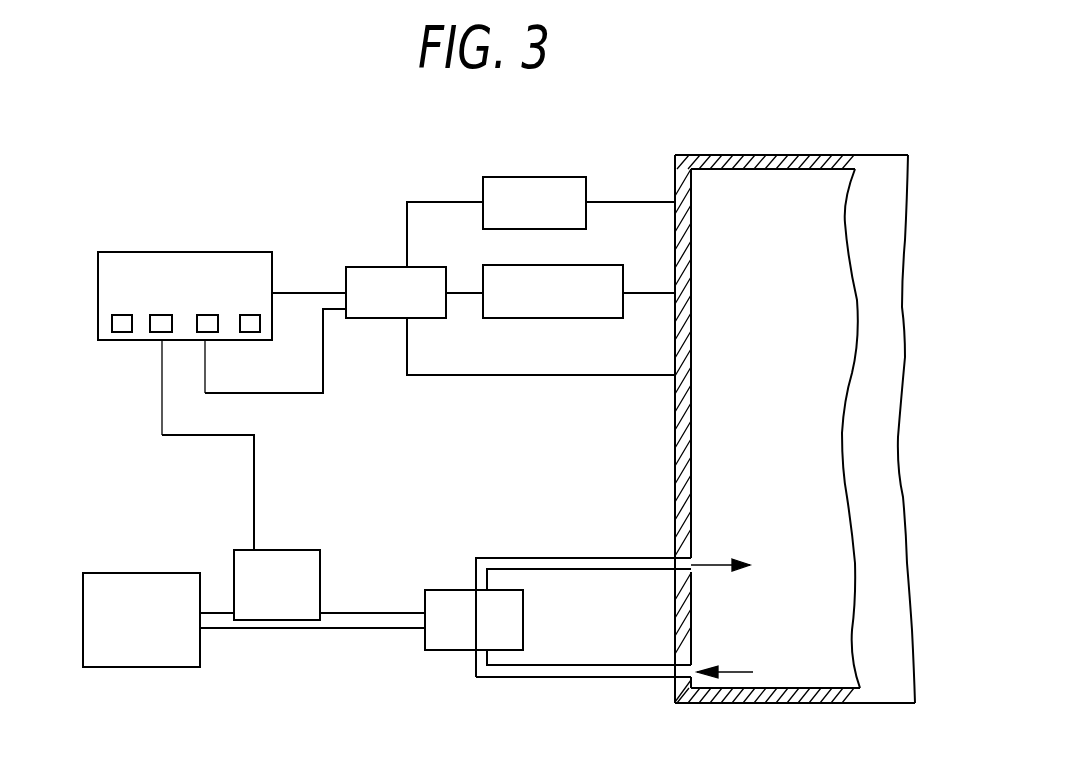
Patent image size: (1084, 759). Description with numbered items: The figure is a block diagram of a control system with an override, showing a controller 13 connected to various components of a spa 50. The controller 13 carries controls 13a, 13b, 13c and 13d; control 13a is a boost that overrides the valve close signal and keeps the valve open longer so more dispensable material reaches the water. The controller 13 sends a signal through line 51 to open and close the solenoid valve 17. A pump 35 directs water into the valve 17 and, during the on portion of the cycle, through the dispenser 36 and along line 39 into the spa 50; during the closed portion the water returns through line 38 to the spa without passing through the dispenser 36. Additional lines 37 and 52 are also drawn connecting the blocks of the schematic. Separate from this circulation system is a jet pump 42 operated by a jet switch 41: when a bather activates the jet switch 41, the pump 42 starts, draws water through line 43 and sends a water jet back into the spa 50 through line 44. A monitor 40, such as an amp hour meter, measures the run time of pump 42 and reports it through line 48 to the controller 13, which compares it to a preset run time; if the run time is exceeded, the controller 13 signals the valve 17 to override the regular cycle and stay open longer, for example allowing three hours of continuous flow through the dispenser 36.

The controller 13 is at (177, 252).
The boost control 13a is at (118, 320).
The control 13b is at (162, 315).
The control 13c is at (208, 320).
The control 13d is at (250, 320).
The solenoid valve 17 is at (363, 267).
The pump 35 is at (540, 175).
The dispenser 36 is at (563, 318).
The pump supply line 37 is at (445, 200).
The line 38 is at (453, 375).
The line 39 is at (650, 290).
The monitor 40 is at (280, 550).
The jet switch 41 is at (128, 572).
The jet pump 42 is at (423, 652).
The line 43 is at (597, 677).
The line 44 is at (568, 558).
The line 48 is at (208, 435).
The spa 50 is at (790, 412).
The line 51 is at (293, 290).
The valve control line 52 is at (323, 357).